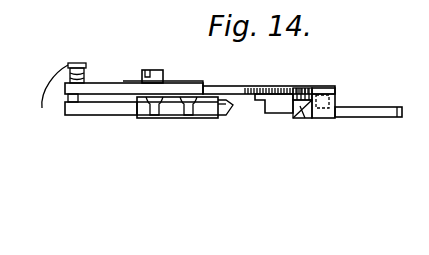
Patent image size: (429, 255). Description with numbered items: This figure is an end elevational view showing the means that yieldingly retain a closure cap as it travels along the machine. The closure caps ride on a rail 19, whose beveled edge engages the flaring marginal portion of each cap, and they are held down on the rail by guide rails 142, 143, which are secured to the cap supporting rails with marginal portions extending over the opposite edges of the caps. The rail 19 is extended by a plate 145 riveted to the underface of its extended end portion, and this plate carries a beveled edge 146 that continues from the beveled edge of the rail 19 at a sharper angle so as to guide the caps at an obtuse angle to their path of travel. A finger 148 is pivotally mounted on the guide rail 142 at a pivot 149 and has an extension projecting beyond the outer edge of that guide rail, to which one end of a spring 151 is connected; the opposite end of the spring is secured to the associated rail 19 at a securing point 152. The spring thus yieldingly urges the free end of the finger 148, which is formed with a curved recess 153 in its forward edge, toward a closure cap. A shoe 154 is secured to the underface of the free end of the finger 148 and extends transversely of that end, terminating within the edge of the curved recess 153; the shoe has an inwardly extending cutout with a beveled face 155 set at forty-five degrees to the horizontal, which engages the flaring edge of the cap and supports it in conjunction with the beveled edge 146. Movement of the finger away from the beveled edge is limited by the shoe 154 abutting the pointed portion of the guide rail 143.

The rail 19 is at (108, 117).
The guide rail 142 is at (123, 95).
The guide rail 143 is at (272, 114).
The plate 145 is at (146, 118).
The beveled edge 146 is at (228, 112).
The finger 148 is at (186, 84).
The pivot 149 is at (159, 70).
The spring 151 is at (88, 77).
The spring securing point 152 is at (72, 98).
The curved recess 153 is at (257, 89).
The shoe 154 is at (330, 118).
The beveled face 155 is at (307, 112).